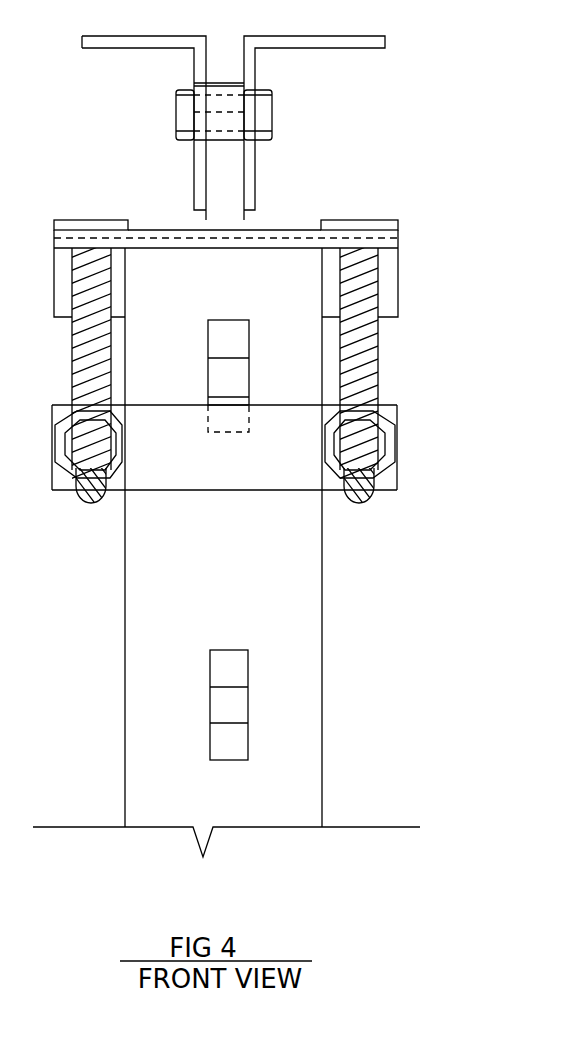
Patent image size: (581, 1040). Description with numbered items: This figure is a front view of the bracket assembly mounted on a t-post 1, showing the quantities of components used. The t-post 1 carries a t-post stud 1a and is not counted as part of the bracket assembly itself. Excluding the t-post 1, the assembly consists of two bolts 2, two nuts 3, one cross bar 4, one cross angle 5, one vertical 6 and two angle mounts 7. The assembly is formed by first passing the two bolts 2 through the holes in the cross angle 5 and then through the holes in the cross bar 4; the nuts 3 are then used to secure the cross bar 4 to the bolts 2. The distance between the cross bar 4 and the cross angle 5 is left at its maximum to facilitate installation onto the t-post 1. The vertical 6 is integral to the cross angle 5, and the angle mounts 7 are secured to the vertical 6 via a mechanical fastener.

The t-post 1 is at (336, 744).
The t-post stud 1a is at (264, 673).
The bolt 2 is at (382, 501).
The nut 3 is at (412, 456).
The cross bar 4 is at (410, 404).
The cross angle 5 is at (413, 268).
The vertical 6 is at (240, 166).
The angle mount 7 is at (386, 51).